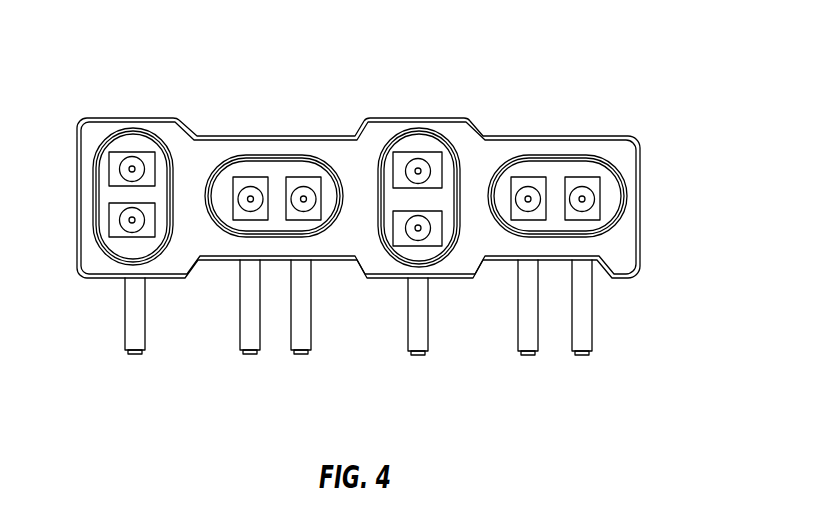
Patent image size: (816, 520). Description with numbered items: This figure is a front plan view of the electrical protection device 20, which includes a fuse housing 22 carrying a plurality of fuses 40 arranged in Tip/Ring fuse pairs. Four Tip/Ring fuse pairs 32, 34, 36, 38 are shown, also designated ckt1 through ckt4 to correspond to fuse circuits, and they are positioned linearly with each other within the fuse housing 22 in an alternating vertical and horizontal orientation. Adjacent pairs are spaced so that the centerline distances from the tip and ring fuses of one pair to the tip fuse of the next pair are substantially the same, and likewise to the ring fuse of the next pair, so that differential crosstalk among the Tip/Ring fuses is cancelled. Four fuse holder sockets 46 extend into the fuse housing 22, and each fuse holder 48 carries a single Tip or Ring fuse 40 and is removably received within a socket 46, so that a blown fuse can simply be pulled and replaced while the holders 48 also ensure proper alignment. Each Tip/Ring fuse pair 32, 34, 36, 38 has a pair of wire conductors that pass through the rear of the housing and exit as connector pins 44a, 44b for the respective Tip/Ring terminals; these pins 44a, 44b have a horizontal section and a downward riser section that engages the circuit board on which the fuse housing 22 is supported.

The electrical protection device 20 is at (638, 82).
The fuse housing 22 is at (643, 164).
The first Tip/Ring fuse pair 32 is at (102, 250).
The second Tip/Ring fuse pair 34 is at (303, 236).
The third Tip/Ring fuse pair 36 is at (392, 257).
The fourth Tip/Ring fuse pair 38 is at (537, 218).
The fuse 40 is at (133, 168).
The connector pin 44a is at (248, 337).
The connector pin 44b is at (134, 340).
The fuse holder socket 46 is at (108, 168).
The fuse holder 48 is at (116, 158).